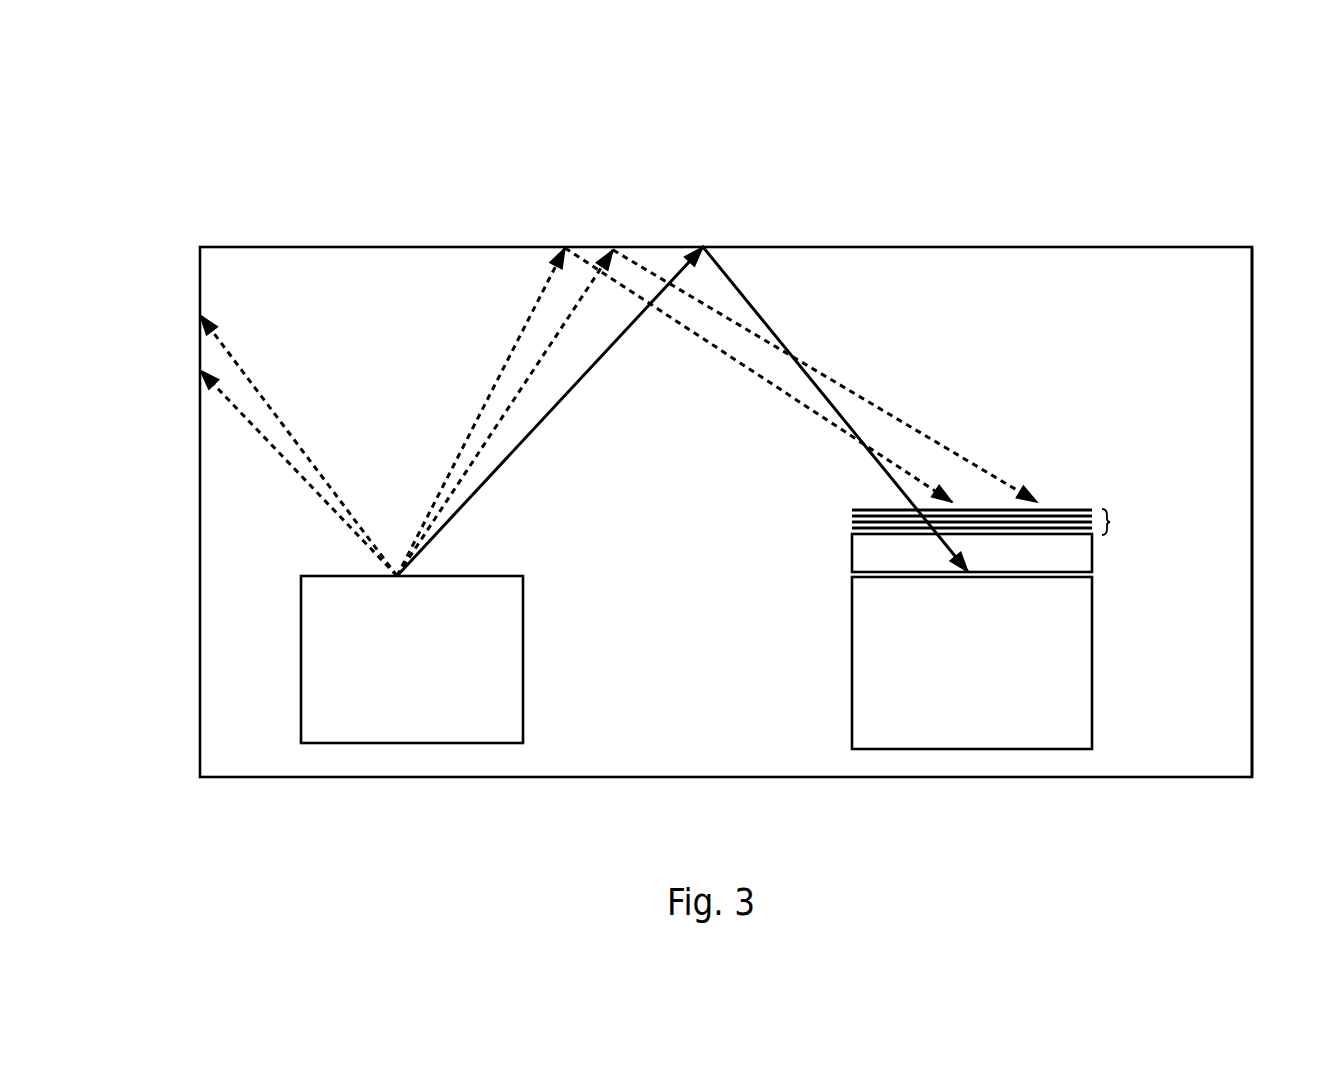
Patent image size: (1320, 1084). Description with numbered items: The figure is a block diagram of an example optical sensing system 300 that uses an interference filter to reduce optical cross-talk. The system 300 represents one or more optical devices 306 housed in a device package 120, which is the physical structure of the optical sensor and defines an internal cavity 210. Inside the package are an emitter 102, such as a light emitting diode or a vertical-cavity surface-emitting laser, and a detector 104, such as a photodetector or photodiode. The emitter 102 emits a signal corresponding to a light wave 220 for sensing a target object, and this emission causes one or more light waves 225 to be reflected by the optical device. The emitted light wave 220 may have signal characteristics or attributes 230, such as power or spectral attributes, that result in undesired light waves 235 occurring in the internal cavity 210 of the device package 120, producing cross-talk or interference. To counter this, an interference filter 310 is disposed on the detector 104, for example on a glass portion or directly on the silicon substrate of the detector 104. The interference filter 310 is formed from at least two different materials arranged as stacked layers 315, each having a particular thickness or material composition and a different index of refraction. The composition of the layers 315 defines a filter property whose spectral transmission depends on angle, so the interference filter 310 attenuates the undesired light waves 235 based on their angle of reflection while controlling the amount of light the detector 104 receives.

The optical sensing system 300 is at (218, 145).
The device package 120 is at (1195, 247).
The internal cavity 210 is at (1252, 367).
The optical device 306 is at (478, 288).
The emitter 102 is at (435, 693).
The detector 104 is at (993, 697).
The light wave 220 is at (495, 472).
The light waves 225 is at (742, 368).
The signal characteristics or attributes 230 is at (498, 378).
The undesired light waves 235 is at (840, 387).
The interference filter 310 is at (848, 537).
The layers 315 is at (1115, 520).